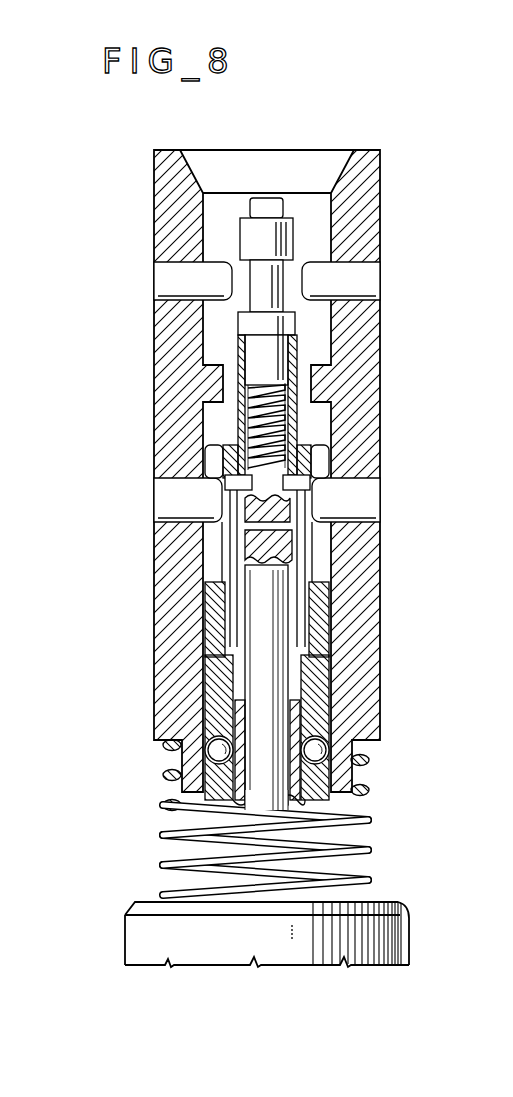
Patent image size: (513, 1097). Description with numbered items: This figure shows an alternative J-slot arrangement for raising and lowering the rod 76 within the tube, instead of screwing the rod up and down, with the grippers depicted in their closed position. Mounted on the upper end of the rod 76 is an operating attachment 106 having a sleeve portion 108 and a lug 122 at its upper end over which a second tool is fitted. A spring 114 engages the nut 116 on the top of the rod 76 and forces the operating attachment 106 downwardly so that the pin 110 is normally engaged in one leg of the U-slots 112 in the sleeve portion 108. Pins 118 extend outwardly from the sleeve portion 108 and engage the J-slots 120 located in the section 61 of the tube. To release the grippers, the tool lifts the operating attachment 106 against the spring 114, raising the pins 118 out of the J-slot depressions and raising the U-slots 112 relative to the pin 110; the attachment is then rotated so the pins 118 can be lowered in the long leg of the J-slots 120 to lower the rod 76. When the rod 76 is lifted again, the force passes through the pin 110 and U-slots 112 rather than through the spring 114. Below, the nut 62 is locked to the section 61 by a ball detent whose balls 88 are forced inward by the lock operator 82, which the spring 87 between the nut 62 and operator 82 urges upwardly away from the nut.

The lock operator 82 is at (372, 178).
The lug 122 is at (247, 228).
The operating attachment 106 is at (247, 323).
The nut 116 is at (253, 375).
The spring 114 is at (290, 428).
The sleeve portion 108 is at (262, 421).
The pins 118 is at (300, 480).
The pin 110 is at (240, 522).
The U-slots 112 is at (243, 538).
The J-slots 120 is at (303, 603).
The rod 76 is at (268, 676).
The section of the tube 61 is at (232, 708).
The balls 88 is at (210, 752).
The spring 87 is at (358, 843).
The nut 62 is at (403, 905).